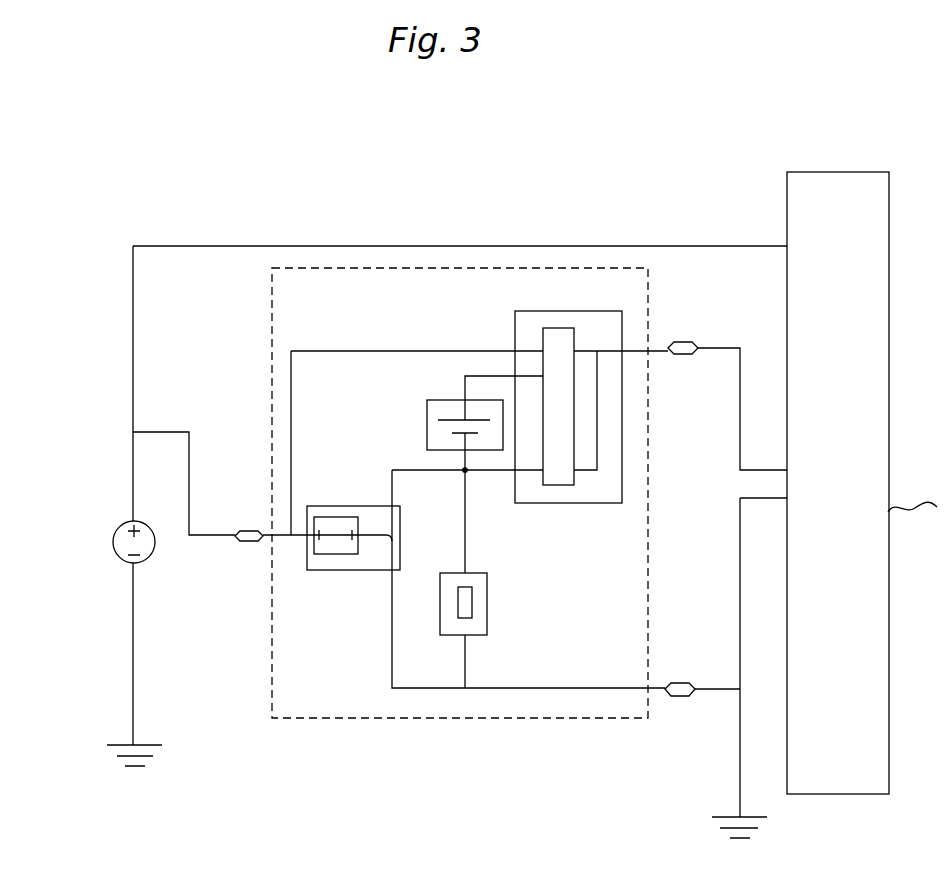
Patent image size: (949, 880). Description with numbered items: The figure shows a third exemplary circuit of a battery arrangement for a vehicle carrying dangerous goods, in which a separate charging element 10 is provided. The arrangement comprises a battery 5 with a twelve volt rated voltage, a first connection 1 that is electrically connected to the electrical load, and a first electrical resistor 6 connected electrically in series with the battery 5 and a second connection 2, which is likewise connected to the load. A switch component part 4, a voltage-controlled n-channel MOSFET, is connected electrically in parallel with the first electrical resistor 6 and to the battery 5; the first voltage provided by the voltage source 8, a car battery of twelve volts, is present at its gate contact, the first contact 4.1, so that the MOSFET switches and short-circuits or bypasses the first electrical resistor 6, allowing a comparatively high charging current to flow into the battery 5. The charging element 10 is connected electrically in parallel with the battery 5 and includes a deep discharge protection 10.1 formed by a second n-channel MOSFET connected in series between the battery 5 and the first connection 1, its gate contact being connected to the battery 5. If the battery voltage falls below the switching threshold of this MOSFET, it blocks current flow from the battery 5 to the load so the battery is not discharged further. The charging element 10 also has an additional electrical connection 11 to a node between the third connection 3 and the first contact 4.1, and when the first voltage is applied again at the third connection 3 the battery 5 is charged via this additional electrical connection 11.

The first connection 1 is at (680, 342).
The second connection 2 is at (683, 696).
The third connection 3 is at (245, 542).
The switch component part 4 is at (342, 570).
The first contact 4.1 is at (305, 535).
The battery 5 is at (440, 400).
The first electrical resistor 6 is at (487, 633).
The voltage source 8 is at (128, 520).
The charging element 10 is at (555, 313).
The deep discharge protection 10.1 is at (599, 354).
The additional electrical connection 11 is at (472, 351).